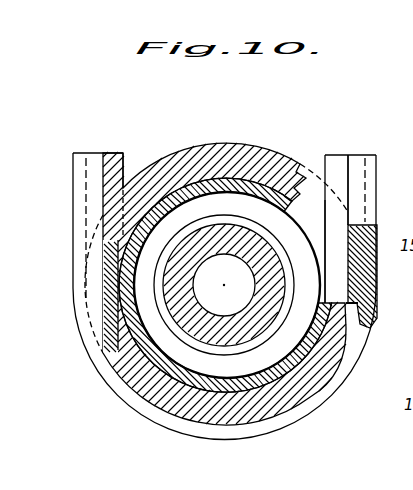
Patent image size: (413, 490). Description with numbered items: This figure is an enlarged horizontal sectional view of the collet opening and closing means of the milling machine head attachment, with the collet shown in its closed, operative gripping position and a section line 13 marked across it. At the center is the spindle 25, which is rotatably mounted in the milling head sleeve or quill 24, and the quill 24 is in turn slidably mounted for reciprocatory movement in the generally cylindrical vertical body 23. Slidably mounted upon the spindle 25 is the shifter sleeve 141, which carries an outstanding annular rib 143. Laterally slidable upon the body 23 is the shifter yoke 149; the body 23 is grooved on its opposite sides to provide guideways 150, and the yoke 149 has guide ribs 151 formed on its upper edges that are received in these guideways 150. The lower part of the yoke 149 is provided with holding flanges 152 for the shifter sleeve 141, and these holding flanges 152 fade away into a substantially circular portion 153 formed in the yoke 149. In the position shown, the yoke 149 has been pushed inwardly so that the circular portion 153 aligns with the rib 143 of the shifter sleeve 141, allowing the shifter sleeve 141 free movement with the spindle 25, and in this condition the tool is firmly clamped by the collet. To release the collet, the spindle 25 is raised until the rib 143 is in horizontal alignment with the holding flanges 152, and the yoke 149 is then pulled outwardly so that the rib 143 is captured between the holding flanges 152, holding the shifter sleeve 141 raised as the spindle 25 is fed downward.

The section line 13— 13 is at (35, 327).
The vertical body 23 is at (221, 152).
The milling head sleeve or quill 24 is at (245, 183).
The spindle 25 is at (260, 247).
The shifter sleeve 141 is at (173, 341).
The outstanding annular rib 143 is at (273, 352).
The shifter yoke 149 is at (73, 232).
The guideways 150 is at (103, 288).
The guide ribs 151 is at (98, 178).
The holding flanges 152 is at (117, 165).
The circular portion 153 is at (326, 268).